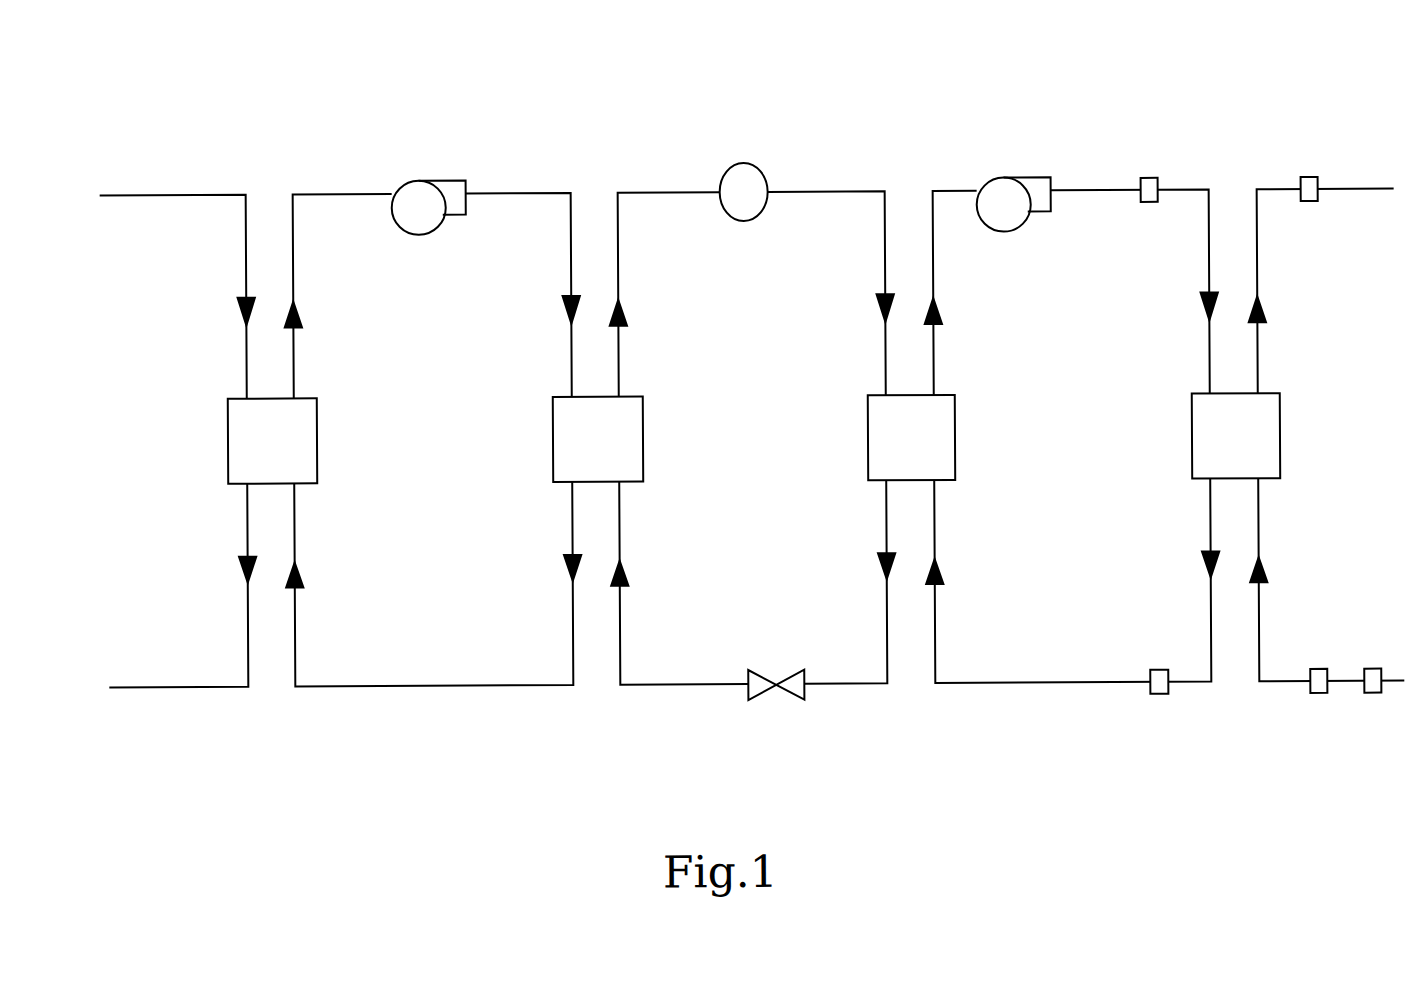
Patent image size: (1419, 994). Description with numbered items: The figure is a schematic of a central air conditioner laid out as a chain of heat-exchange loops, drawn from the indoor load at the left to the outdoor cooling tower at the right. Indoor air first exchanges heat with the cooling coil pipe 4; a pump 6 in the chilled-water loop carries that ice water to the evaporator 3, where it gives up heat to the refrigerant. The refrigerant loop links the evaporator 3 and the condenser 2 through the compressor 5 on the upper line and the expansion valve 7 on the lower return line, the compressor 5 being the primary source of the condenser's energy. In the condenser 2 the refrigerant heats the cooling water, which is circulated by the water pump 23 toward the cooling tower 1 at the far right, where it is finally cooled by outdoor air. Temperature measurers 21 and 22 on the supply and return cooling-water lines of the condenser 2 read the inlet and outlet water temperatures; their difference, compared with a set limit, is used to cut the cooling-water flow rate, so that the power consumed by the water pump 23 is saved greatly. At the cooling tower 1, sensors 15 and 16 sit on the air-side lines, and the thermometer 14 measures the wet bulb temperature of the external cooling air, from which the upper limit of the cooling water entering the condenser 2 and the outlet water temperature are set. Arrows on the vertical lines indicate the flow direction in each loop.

The heat exchanger (first) 1 is at (1273, 437).
The condenser 2 is at (950, 439).
The evaporator 3 is at (635, 441).
The cooling coil pipe 4 is at (310, 441).
The compressor 5 is at (743, 187).
The pump 6 is at (425, 197).
The expansion valve 7 is at (762, 687).
The thermometer 14 is at (1316, 688).
The sensor 15 is at (1310, 190).
The sensor 16 is at (1372, 688).
The temperature measurer 21 is at (1150, 190).
The temperature measurer 22 is at (1160, 690).
The water pump 23 is at (1008, 193).